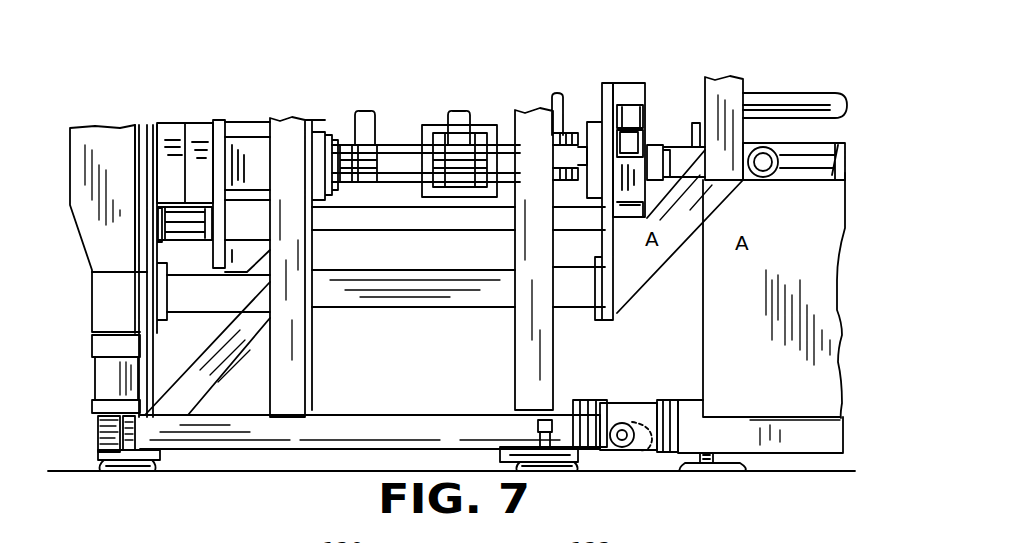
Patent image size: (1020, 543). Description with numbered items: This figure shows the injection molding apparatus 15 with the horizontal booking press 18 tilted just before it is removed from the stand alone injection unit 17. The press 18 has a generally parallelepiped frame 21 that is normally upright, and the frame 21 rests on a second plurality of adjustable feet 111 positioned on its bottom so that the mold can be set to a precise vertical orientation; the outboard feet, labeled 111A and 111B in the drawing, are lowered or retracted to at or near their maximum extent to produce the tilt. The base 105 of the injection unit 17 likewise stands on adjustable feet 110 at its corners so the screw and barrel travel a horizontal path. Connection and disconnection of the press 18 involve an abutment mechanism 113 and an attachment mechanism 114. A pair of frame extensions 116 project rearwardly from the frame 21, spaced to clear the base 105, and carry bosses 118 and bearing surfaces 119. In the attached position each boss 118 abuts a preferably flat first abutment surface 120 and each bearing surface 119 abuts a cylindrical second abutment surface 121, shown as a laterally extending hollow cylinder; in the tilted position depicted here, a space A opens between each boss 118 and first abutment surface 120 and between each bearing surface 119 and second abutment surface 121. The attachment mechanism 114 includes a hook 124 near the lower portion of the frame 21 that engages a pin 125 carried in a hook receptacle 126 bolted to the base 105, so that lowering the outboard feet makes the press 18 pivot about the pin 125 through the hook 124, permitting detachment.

The injection molding apparatus 15 is at (118, 91).
The injection unit 17 is at (848, 262).
The horizontal booking press 18 is at (73, 322).
The frame 21 is at (340, 453).
The base 105 is at (785, 359).
The adjustable feet 110 is at (740, 466).
The adjustable feet 111 is at (143, 470).
The foot mounting plate 111A is at (520, 462).
The foot pad 111B is at (108, 466).
The abutment mechanism 113 is at (672, 116).
The attachment mechanism 114 is at (630, 462).
The frame extensions 116 is at (693, 212).
The boss 118 is at (658, 232).
The bearing surface 119 is at (747, 178).
The first abutment surface 120 is at (672, 147).
The second abutment surface 121 is at (773, 182).
The hook 124 is at (609, 412).
The pin 125 is at (624, 426).
The hook receptacle 126 is at (647, 396).